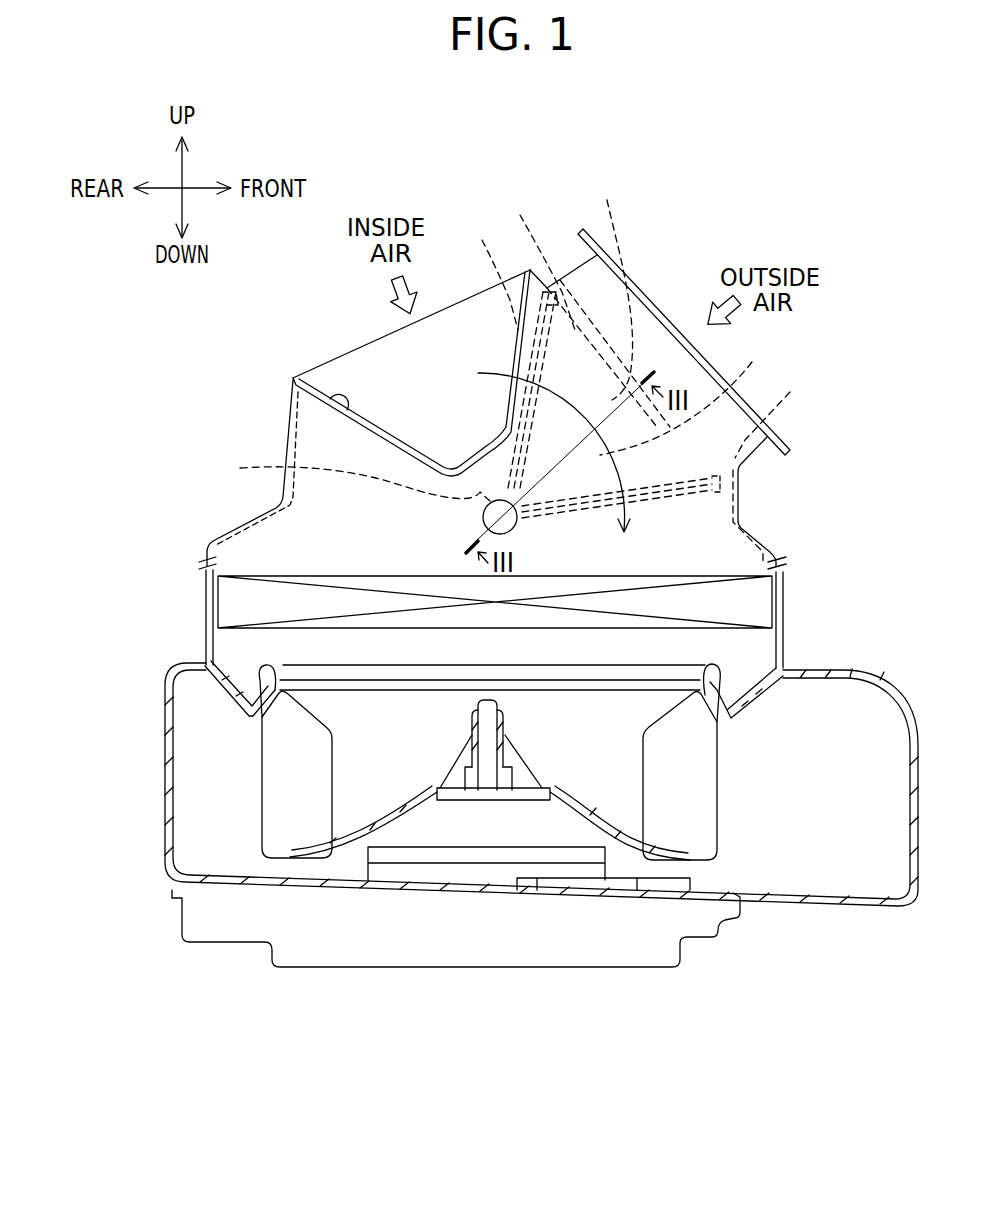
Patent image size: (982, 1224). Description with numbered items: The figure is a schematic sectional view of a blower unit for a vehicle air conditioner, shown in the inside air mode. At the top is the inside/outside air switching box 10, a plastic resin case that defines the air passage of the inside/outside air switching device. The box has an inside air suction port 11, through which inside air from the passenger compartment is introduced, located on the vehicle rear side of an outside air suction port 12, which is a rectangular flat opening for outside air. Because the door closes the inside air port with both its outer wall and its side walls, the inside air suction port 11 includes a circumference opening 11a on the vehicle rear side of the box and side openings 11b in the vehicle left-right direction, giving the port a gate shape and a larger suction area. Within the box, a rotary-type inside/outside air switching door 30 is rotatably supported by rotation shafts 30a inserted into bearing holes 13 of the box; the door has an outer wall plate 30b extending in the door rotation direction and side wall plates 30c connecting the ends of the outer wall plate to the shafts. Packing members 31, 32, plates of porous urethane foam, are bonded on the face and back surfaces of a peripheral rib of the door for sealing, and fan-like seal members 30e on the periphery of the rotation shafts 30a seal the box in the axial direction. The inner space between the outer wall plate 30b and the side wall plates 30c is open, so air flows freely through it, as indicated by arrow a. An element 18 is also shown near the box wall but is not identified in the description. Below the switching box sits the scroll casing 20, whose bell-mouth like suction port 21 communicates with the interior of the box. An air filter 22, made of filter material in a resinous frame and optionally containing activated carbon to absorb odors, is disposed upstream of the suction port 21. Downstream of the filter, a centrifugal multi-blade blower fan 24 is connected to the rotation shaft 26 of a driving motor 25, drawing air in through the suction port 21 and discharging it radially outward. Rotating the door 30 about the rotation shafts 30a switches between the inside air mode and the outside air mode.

The inside/outside air switching box 10 is at (739, 506).
The inside air suction port 11 is at (406, 359).
The circumference opening 11a is at (357, 349).
The side openings 11b is at (342, 406).
The outside air suction port 12 is at (668, 325).
The bearing holes 13 is at (260, 516).
The seal member 18 is at (297, 391).
The scroll casing 20 is at (165, 775).
The bell-mouth like suction port 21 is at (782, 655).
The air filter 22 is at (258, 598).
The blower fan 24 is at (280, 780).
The driving motor 25 is at (253, 918).
The rotation shaft 26 is at (485, 733).
The rotary-type inside/outside air switching door 30 is at (617, 365).
The rotation shafts 30a is at (483, 517).
The outer wall plate 30b is at (607, 283).
The side wall plates 30c is at (700, 397).
The seal members 30e is at (336, 476).
The packing member 31 is at (657, 320).
The packing member 32 is at (813, 541).
The arrow a is at (621, 519).